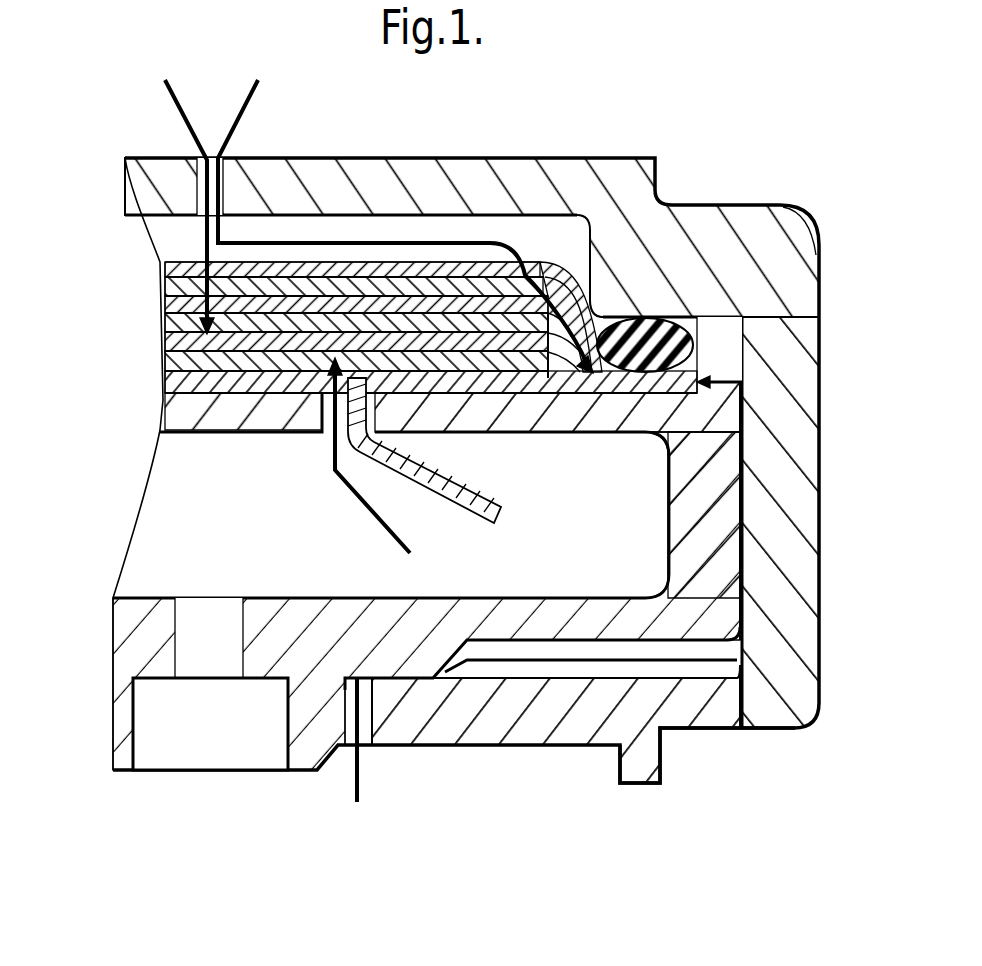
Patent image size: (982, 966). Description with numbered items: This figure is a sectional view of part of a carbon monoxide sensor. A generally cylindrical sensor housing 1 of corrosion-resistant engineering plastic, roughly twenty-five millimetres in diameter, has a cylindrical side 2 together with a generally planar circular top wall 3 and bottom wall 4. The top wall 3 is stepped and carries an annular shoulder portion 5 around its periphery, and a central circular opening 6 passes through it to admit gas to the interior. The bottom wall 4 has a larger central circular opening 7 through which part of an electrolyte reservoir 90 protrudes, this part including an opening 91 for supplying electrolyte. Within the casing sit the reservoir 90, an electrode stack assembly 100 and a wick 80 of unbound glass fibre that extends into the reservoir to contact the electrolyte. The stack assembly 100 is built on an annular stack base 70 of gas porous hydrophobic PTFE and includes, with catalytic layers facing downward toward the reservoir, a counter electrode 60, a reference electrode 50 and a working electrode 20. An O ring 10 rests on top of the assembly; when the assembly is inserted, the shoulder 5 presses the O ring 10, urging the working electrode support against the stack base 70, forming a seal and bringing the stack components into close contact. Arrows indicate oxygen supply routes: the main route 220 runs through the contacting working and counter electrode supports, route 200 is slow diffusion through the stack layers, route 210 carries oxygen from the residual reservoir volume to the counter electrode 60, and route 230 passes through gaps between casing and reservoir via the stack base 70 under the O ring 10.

The sensor housing 1 is at (750, 742).
The cylindrical side 2 is at (820, 527).
The top wall 3 is at (457, 170).
The bottom wall 4 is at (485, 750).
The annular shoulder portion 5 is at (597, 317).
The central circular opening 6 is at (227, 177).
The central circular opening 7 is at (372, 718).
The O ring 10 is at (663, 348).
The working electrode 20 is at (187, 262).
The reference electrode 50 is at (175, 302).
The counter electrode 60 is at (163, 322).
The stack base 70 is at (550, 395).
The wick 80 is at (470, 515).
The electrolyte reservoir 90 is at (574, 646).
The opening 91 is at (213, 660).
The electrode stack assembly 100 is at (335, 303).
The arrow 200 is at (178, 191).
The arrow 210 is at (382, 472).
The arrow 220 is at (405, 210).
The arrow 230 is at (356, 755).